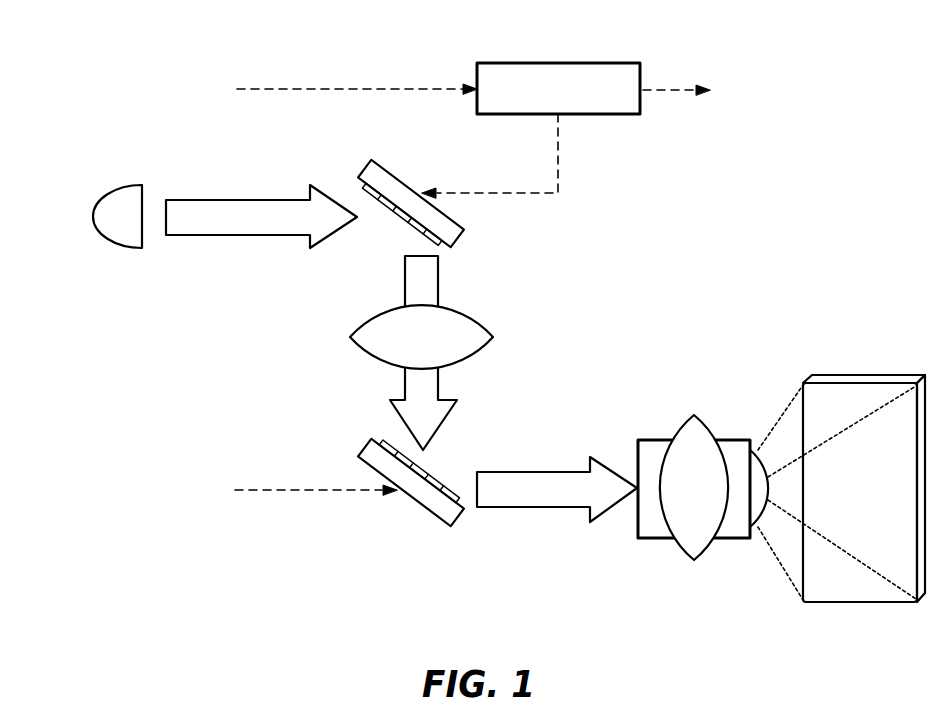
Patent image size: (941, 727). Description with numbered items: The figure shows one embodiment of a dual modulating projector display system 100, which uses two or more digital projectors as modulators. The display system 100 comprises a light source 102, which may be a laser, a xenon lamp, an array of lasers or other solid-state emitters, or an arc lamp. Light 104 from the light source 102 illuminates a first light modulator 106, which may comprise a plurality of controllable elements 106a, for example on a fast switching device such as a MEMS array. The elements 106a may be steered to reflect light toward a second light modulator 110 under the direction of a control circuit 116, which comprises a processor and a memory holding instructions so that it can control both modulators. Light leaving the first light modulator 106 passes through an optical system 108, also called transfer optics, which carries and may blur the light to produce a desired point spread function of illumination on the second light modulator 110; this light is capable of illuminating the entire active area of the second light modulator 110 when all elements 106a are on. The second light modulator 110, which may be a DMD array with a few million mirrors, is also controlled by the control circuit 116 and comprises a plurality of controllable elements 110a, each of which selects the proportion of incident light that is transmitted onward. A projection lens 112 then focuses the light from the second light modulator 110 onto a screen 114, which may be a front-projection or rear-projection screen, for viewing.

The dual modulating projector display system 100 is at (145, 58).
The light source 102 is at (140, 183).
The light 104 is at (238, 199).
The first light modulator 106 is at (382, 168).
The controllable elements 106a is at (358, 192).
The optical system 108 is at (451, 305).
The second light modulator 110 is at (415, 500).
The controllable elements 110a is at (392, 443).
The projection lens 112 is at (687, 422).
The screen 114 is at (842, 374).
The control circuit 116 is at (535, 63).